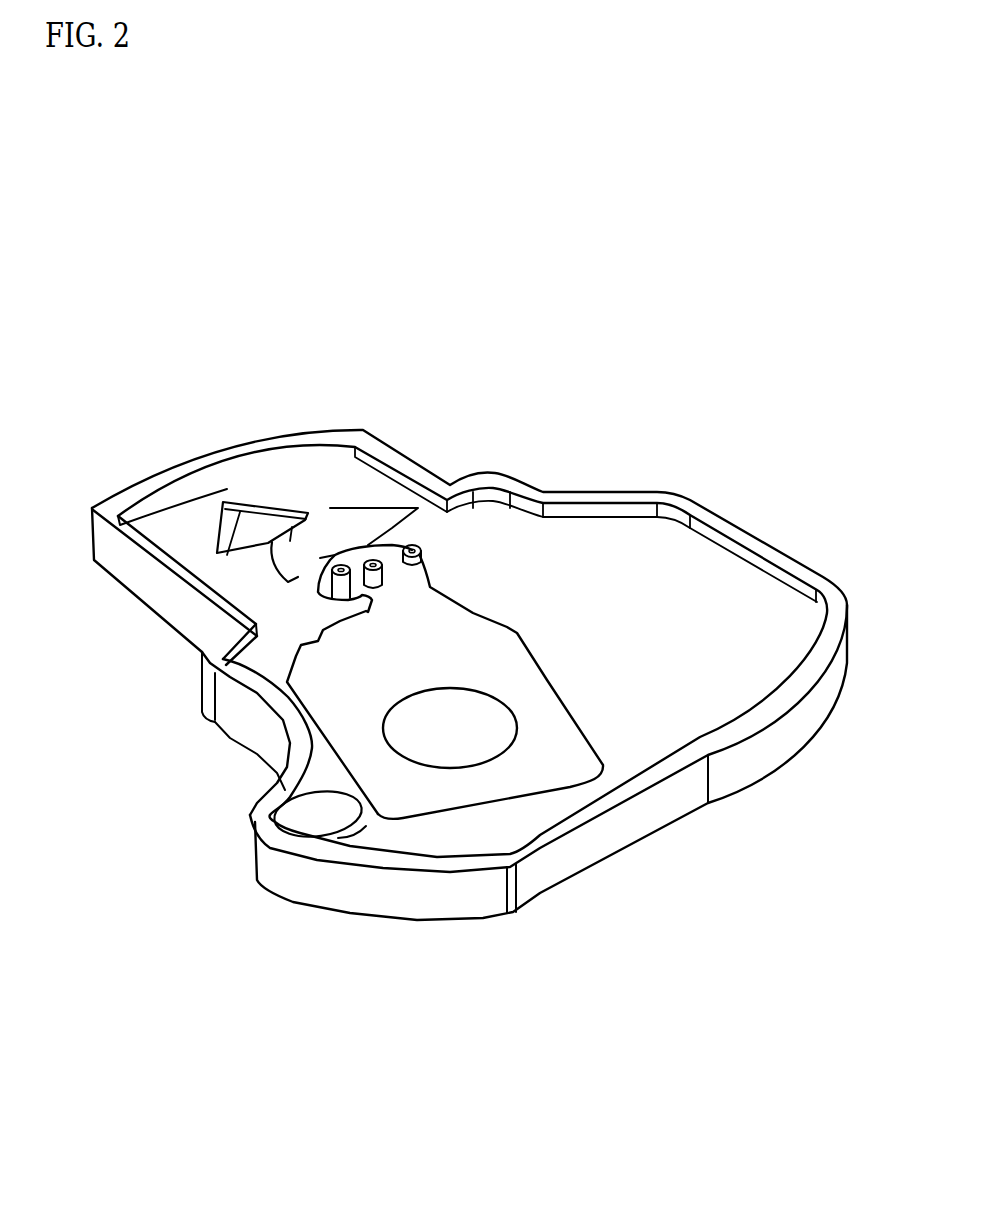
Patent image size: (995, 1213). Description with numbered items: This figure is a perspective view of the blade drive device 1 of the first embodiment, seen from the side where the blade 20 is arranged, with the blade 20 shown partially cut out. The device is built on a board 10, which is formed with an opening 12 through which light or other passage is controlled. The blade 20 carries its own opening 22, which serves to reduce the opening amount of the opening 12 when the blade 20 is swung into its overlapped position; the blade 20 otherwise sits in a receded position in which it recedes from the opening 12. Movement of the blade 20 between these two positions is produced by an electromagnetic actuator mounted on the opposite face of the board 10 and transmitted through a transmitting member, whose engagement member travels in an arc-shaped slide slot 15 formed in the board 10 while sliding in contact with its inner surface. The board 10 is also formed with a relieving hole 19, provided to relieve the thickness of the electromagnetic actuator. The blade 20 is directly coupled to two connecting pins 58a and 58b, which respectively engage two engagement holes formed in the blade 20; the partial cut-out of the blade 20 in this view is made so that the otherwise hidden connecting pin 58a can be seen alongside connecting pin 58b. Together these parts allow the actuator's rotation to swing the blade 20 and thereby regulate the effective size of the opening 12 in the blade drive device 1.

The blade drive device 1 is at (668, 467).
The board 10 is at (806, 527).
The opening 12 is at (440, 748).
The opening 22 is at (450, 728).
The slide slot 15 is at (418, 548).
The relieving hole 19 is at (282, 500).
The blade 20 is at (325, 777).
The connecting pin 58a is at (344, 560).
The connecting pin 58b is at (376, 560).